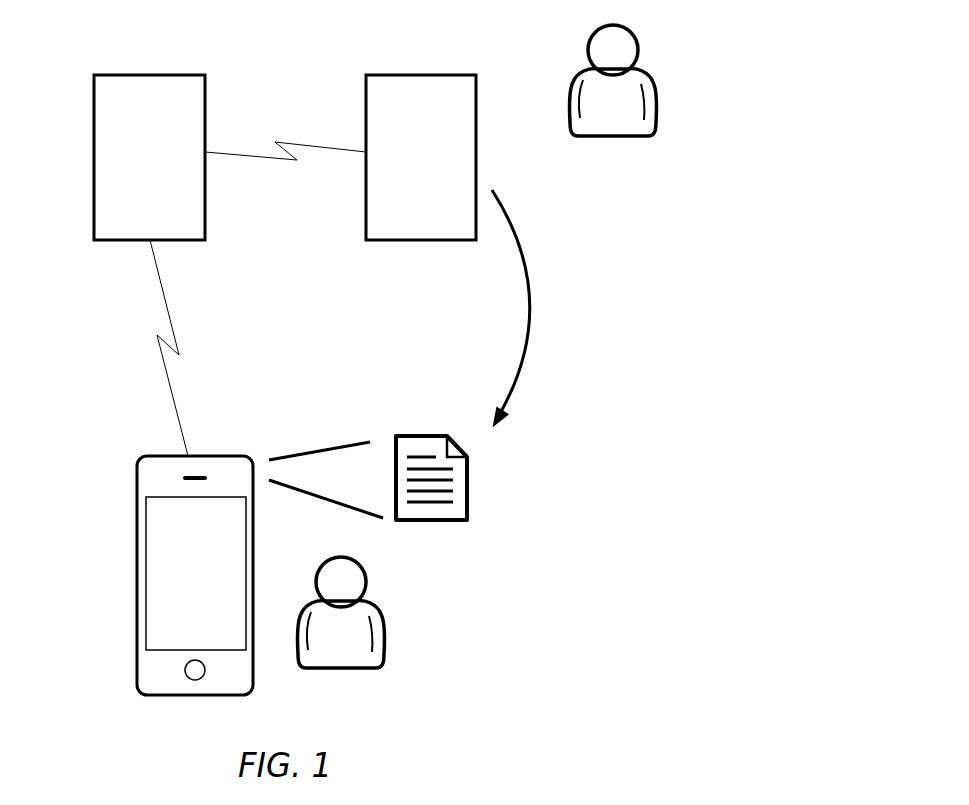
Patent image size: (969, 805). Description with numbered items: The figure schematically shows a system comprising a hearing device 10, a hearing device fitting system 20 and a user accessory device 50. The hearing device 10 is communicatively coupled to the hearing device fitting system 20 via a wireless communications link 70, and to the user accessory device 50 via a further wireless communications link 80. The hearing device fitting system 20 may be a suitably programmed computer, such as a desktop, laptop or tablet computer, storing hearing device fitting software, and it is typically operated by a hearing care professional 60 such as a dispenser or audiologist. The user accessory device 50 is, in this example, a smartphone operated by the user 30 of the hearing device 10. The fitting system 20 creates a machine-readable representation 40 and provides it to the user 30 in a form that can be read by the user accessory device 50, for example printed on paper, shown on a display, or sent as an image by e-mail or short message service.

The hearing device 10 is at (117, 240).
The hearing device fitting system 20 is at (476, 148).
The user 30 is at (350, 572).
The representation 40 is at (467, 480).
The user accessory device 50 is at (138, 553).
The hearing care professional 60 is at (622, 39).
The wireless communications link 70 is at (285, 160).
The wireless communications link 80 is at (165, 358).